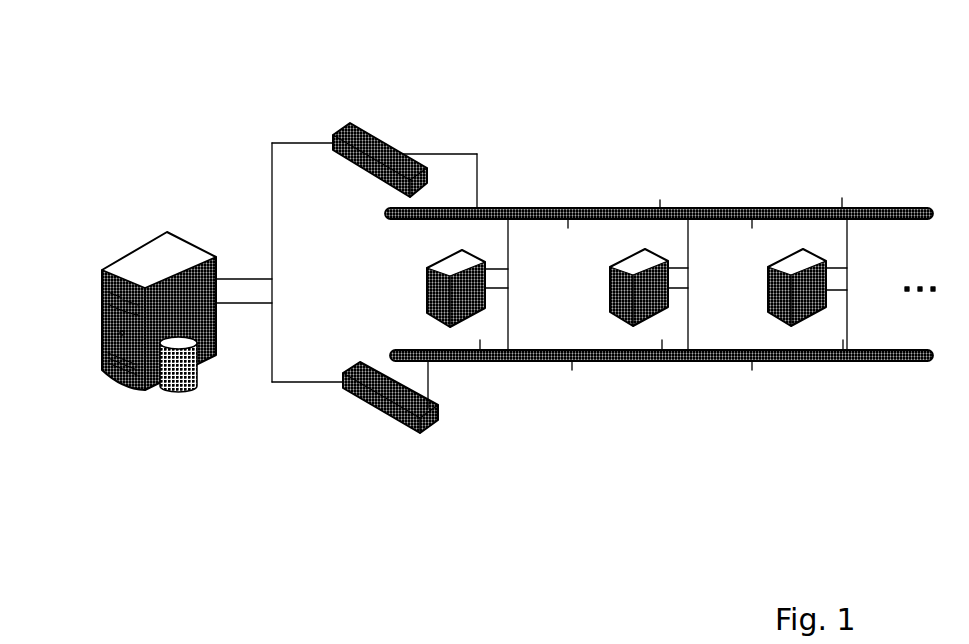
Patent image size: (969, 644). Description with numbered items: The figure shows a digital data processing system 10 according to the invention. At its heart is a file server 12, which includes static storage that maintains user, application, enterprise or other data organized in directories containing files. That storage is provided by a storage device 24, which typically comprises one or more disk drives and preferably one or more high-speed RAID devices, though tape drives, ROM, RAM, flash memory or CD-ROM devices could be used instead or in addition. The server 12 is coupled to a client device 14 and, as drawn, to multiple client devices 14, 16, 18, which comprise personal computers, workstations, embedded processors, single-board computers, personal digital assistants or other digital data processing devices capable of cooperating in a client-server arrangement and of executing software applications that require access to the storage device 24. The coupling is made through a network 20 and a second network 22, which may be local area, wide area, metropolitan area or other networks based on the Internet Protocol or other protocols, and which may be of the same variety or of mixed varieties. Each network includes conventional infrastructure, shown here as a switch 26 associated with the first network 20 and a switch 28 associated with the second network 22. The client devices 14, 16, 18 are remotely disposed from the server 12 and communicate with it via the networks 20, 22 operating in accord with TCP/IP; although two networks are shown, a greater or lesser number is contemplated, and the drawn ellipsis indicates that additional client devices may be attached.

The digital data processing system 10 is at (207, 40).
The file server 12 is at (94, 345).
The client device 14 is at (427, 295).
The client device 16 is at (608, 295).
The client device 18 is at (762, 295).
The network 20 is at (683, 195).
The network 22 is at (683, 375).
The storage device 24 is at (187, 388).
The switch 26 is at (372, 127).
The switch 28 is at (430, 443).